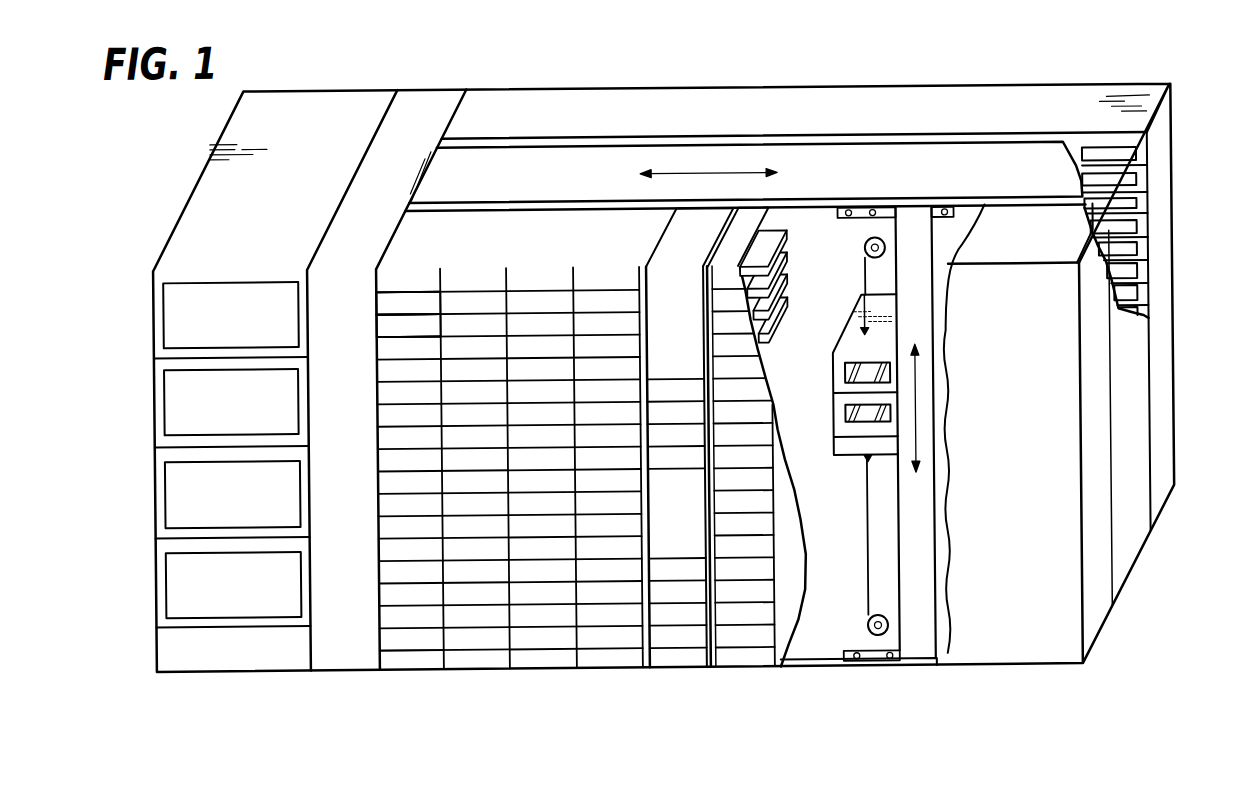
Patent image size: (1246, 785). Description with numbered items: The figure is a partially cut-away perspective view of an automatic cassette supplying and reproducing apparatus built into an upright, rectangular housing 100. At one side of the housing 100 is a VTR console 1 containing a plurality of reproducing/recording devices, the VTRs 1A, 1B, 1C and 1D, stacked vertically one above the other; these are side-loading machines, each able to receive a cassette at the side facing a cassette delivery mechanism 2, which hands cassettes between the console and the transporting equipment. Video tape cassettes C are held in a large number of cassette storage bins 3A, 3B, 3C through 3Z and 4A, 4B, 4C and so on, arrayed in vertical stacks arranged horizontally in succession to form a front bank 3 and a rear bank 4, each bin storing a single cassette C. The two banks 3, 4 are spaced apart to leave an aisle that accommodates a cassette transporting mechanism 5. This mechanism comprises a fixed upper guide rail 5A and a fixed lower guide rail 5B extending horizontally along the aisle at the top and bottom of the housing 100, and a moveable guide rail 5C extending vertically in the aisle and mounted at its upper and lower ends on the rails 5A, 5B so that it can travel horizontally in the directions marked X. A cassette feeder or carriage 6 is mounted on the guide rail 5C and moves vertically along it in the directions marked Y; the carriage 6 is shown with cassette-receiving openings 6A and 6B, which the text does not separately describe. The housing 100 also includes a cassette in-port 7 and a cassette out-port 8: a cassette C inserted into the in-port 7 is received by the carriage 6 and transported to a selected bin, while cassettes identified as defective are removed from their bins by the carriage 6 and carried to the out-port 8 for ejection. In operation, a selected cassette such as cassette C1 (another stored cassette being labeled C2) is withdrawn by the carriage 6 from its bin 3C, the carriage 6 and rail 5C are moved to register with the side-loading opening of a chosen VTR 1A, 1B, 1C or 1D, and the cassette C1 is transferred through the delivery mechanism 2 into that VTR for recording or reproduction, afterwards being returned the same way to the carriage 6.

The housing 100 is at (206, 127).
The VTR console 1 is at (308, 102).
The VTR 1A is at (173, 309).
The VTR 1B is at (174, 393).
The VTR 1C is at (173, 481).
The VTR 1D is at (173, 581).
The cassette delivery mechanism 2 is at (416, 101).
The front bank 3 is at (475, 216).
The cassette storage bin 3A is at (399, 278).
The cassette storage bin 3B is at (422, 296).
The cassette storage bin 3C is at (418, 320).
The cassette storage bin 3Z is at (420, 660).
The rear bank 4 is at (596, 113).
The cassette storage bin 4A is at (1136, 162).
The cassette storage bin 4B is at (1136, 187).
The cassette storage bin 4C is at (1136, 210).
The cassette transporting mechanism 5 is at (813, 157).
The upper guide rail 5A is at (915, 203).
The lower guide rail 5B is at (860, 666).
The moveable guide rail 5C is at (931, 568).
The carriage 6 is at (852, 456).
The gripper window 6A is at (894, 373).
The gripper window 6B is at (894, 415).
The cassette in-port 7 is at (682, 291).
The cassette out-port 8 is at (690, 541).
The video tape cassette C is at (1156, 135).
The selected cassette C1 is at (408, 325).
The cassette in shelf C2 is at (408, 303).